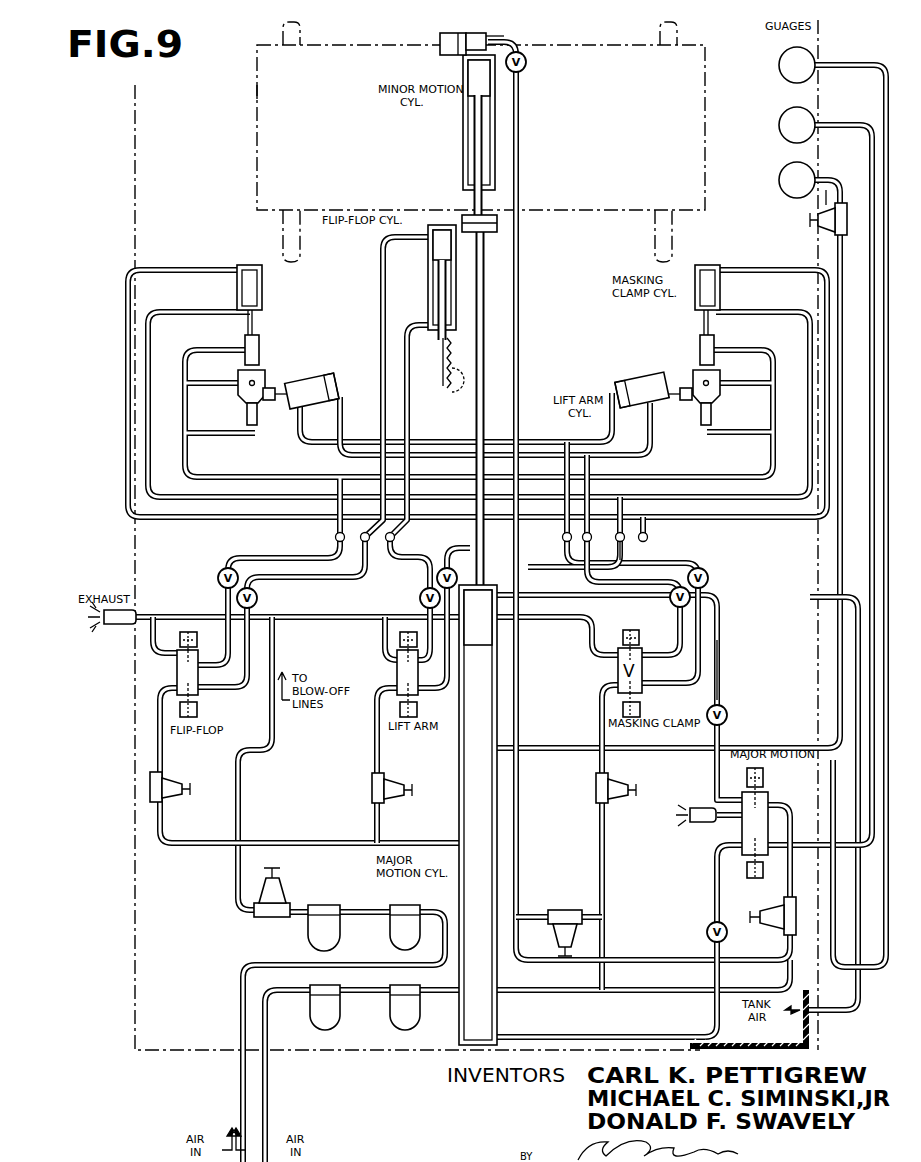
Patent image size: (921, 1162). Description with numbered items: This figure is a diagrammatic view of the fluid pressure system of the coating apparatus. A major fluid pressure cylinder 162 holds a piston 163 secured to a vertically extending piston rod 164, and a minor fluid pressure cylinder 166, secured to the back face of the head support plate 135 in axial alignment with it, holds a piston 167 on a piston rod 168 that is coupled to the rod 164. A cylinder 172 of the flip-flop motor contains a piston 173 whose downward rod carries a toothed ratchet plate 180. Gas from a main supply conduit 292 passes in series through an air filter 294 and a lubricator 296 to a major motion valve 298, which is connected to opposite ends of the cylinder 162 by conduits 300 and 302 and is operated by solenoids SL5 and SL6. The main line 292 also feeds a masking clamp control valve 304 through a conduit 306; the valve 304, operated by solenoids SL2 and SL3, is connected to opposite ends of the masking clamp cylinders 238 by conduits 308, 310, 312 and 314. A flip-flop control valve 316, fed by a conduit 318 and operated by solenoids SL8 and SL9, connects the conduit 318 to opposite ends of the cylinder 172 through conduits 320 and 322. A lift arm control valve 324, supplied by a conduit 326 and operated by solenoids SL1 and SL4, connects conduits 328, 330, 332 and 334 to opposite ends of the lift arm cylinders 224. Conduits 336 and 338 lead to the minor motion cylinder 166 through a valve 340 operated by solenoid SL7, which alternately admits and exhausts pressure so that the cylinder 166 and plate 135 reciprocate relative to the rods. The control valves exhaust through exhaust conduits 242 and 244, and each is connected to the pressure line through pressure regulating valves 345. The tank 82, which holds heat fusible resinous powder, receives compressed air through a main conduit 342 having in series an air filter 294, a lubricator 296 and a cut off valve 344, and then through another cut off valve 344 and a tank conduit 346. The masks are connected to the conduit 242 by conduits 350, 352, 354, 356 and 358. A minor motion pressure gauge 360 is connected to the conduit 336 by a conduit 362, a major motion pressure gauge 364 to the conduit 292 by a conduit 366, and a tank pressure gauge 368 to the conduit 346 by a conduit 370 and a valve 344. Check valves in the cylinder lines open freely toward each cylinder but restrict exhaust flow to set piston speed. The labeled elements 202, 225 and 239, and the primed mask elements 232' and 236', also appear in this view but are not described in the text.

The tank 82 is at (817, 1034).
The head support plate 135 is at (250, 84).
The major fluid pressure cylinder 162 is at (460, 774).
The fluid pressure piston 163 is at (496, 640).
The piston rod 164 is at (470, 258).
The minor fluid pressure cylinder 166 is at (462, 132).
The piston 167 is at (470, 81).
The piston rod 168 is at (470, 192).
The flip-flop motor cylinder 172 is at (434, 294).
The piston 173 is at (438, 264).
The ratchet plate 180 is at (460, 358).
The gear 202 is at (466, 394).
The lift arm cylinder 224 is at (312, 380).
The lift arm cylinder rod 225 is at (294, 411).
The valve body 232' is at (501, 378).
The valve actuator 236' is at (510, 341).
The masking clamp cylinder 238 is at (264, 290).
The cylinder rod 239 is at (262, 306).
The exhaust conduit 242 is at (286, 616).
The exhaust conduit 244 is at (712, 808).
The main supply conduit 292 is at (516, 994).
The air filter 294 is at (390, 930).
The lubricator 296 is at (308, 934).
The major motion valve 298 is at (766, 814).
The conduit 300 is at (725, 674).
The conduit 302 is at (598, 1038).
The masking clamp control valve 304 is at (616, 672).
The conduit 306 is at (606, 766).
The conduit 308 is at (644, 556).
The conduit 310 is at (202, 313).
The conduit 312 is at (610, 586).
The conduit 314 is at (225, 268).
The flip-flop control valve 316 is at (177, 674).
The conduit 318 is at (286, 842).
The conduit 320 is at (375, 300).
The conduit 322 is at (426, 438).
The lift arm control valve 324 is at (368, 672).
The conduit 326 is at (374, 770).
The conduit 328 is at (562, 546).
The conduit 330 is at (532, 440).
The conduit 332 is at (530, 566).
The conduit 334 is at (618, 455).
The minor motion cylinder conduit 336 is at (520, 286).
The conduit 338 is at (526, 910).
The valve 340 is at (489, 32).
The main conduit 342 is at (238, 984).
The cut off valve 344 is at (828, 232).
The pressure regulating valve 345 is at (168, 790).
The tank conduit 346 is at (814, 600).
The conduit 350 is at (276, 723).
The conduit 352 is at (244, 476).
The conduit 354 is at (184, 434).
The conduit 356 is at (204, 348).
The conduit 358 is at (192, 386).
The minor motion pressure gauge 360 is at (786, 80).
The conduit 362 is at (878, 72).
The major motion pressure gauge 364 is at (790, 140).
The conduit 366 is at (868, 128).
The tank pressure gauge 368 is at (786, 188).
The conduit 370 is at (828, 200).
The solenoid SL1 is at (400, 640).
The solenoid SL2 is at (640, 644).
The solenoid SL3 is at (653, 705).
The solenoid SL4 is at (427, 705).
The solenoid SL5 is at (764, 778).
The solenoid SL6 is at (746, 878).
The solenoid SL7 is at (454, 36).
The solenoid SL8 is at (194, 642).
The solenoid SL9 is at (196, 708).